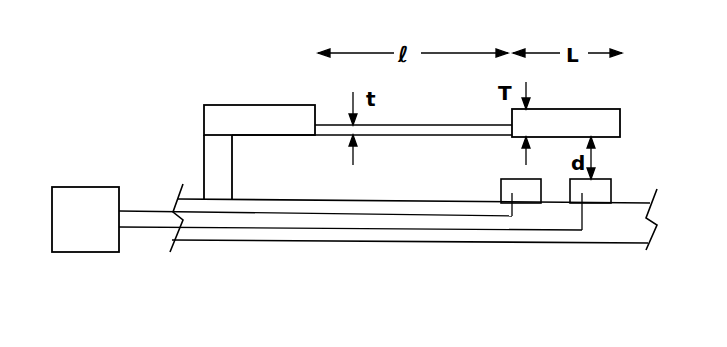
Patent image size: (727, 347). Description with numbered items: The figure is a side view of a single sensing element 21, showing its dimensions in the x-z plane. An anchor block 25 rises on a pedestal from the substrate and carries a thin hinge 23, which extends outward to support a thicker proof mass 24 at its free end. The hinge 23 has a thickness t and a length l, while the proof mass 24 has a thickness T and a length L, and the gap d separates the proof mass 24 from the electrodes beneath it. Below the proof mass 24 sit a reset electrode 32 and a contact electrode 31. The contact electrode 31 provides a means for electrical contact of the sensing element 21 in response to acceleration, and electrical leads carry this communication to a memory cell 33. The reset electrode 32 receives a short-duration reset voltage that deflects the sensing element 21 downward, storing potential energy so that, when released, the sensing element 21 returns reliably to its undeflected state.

The sensing element 21 is at (156, 87).
The hinge 23 is at (444, 125).
The proof mass 24 is at (554, 135).
The anchor block 25 is at (246, 131).
The contact electrode 31 is at (599, 179).
The reset electrode 32 is at (516, 179).
The memory cell 33 is at (73, 231).